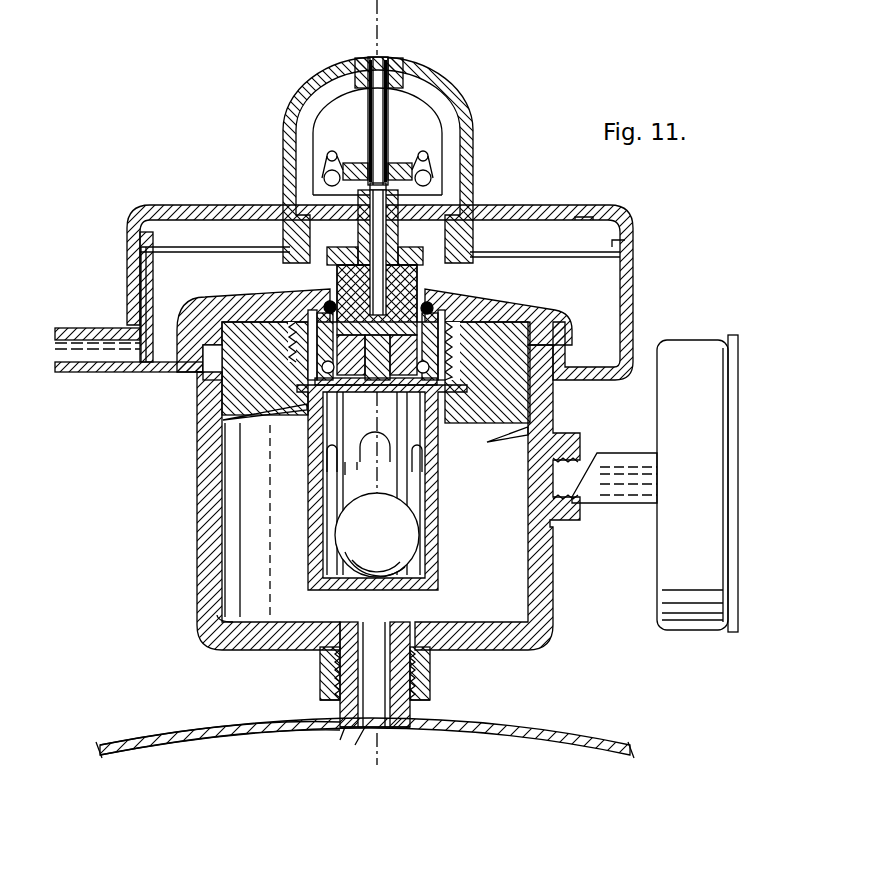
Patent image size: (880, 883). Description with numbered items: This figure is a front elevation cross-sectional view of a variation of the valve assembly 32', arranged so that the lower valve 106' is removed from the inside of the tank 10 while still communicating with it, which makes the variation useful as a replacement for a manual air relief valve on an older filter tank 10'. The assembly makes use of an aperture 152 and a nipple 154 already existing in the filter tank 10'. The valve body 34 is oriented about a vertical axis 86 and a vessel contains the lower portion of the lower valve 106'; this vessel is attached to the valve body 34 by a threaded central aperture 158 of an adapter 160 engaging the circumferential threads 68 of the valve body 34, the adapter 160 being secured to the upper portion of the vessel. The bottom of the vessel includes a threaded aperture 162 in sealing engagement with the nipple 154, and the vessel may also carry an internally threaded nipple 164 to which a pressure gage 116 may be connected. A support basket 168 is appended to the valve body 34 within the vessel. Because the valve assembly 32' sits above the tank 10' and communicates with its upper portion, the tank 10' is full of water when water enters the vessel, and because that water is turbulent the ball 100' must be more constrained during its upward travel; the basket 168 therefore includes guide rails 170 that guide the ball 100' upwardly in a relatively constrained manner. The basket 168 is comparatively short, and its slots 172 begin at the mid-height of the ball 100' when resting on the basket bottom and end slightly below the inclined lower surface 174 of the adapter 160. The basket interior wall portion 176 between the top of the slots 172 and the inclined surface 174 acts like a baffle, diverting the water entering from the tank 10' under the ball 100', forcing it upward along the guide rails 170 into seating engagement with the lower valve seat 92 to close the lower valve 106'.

The vertical axis 86 is at (380, 20).
The valve assembly 32' is at (344, 218).
The valve body 34 is at (460, 313).
The circumferential threads 68 is at (460, 355).
The threaded central aperture 158 is at (250, 365).
The adapter 160 is at (235, 398).
The lower valve seat 92 is at (407, 380).
The basket interior wall portion 176 is at (355, 392).
The guide rails 170 is at (337, 447).
The slots 172 is at (357, 466).
The inclined lower surface 174 is at (530, 433).
The pressure gauge 116 is at (702, 453).
The internally threaded nipple 164 is at (558, 510).
The support basket 168 is at (388, 497).
The ball 100' is at (372, 535).
The lower valve 106' is at (366, 492).
The nipple 154 is at (343, 710).
The threaded aperture 162 is at (410, 667).
The aperture 152 is at (365, 742).
The filter tank 10' is at (220, 718).
The tank 10 is at (365, 721).